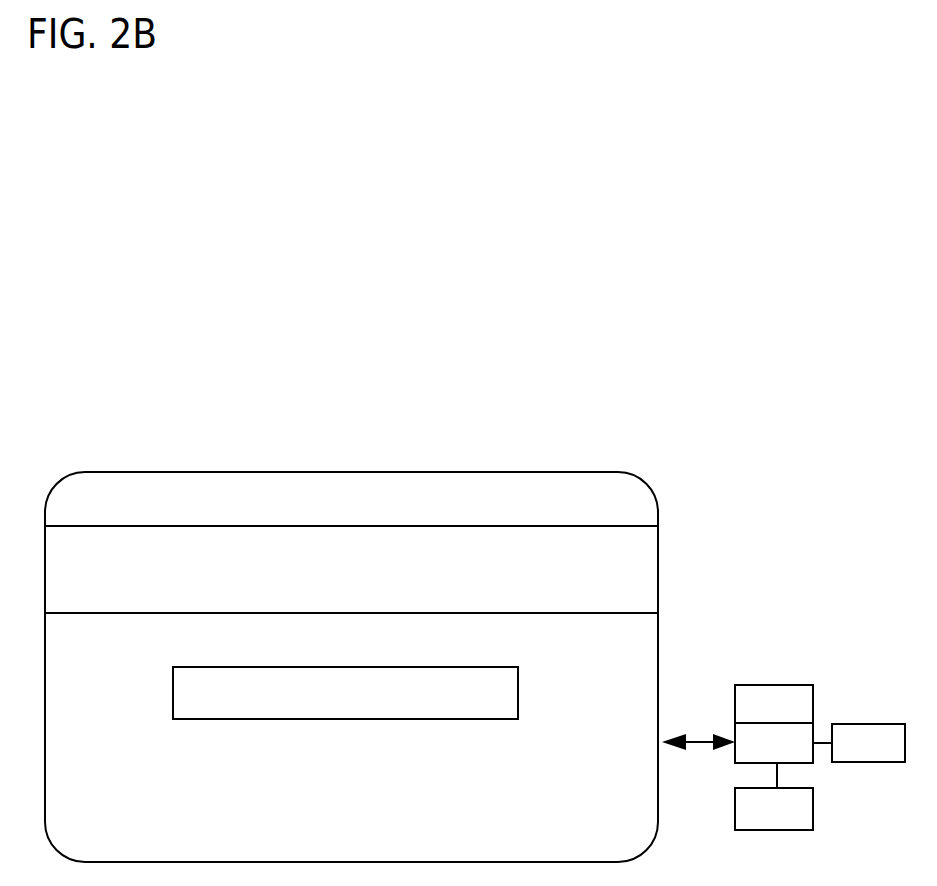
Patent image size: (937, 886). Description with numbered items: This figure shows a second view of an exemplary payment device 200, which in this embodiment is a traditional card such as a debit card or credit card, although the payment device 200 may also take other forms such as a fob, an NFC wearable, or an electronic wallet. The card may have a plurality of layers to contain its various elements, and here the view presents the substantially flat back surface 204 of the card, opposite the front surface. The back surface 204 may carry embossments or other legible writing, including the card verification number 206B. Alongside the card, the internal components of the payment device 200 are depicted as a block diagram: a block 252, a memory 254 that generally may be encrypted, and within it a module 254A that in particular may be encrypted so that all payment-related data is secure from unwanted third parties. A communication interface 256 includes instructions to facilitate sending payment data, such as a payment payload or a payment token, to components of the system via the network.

The payment device 200 is at (160, 477).
The back surface 204 is at (637, 655).
The card verification number (CVN) 206B is at (484, 662).
The processor 252 is at (774, 704).
The memory 254 is at (783, 755).
The module 254A is at (868, 743).
The communication interface 256 is at (774, 809).